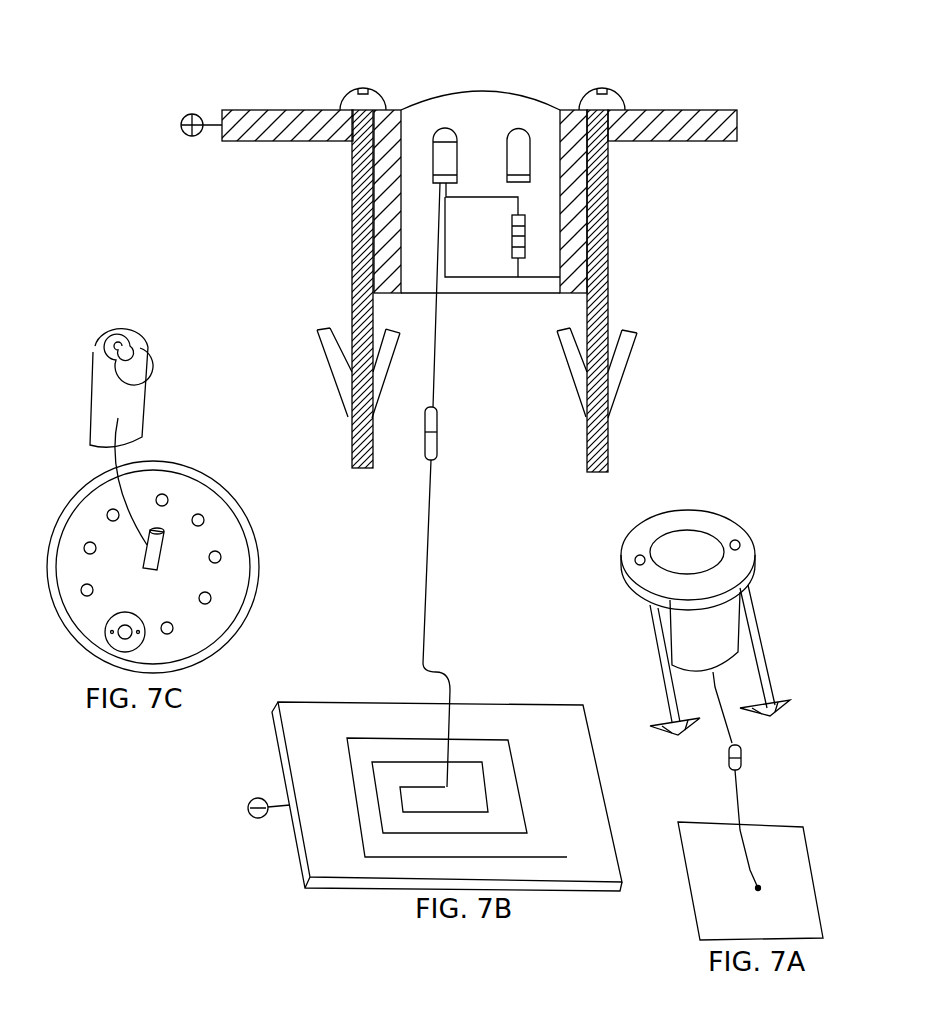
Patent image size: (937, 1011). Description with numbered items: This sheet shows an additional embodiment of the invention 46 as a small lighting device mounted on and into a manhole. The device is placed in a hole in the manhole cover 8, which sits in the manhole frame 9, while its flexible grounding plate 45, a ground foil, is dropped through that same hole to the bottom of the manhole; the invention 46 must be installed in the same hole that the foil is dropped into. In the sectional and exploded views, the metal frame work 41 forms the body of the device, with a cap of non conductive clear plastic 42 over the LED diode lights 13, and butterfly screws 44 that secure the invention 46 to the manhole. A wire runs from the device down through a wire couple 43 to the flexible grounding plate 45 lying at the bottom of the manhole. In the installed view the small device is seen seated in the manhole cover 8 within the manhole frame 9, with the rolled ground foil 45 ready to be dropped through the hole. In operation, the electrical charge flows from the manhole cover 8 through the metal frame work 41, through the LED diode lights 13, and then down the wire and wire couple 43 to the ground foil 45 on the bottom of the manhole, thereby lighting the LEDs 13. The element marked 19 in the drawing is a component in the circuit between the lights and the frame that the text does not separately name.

In FIG. 7C, the manhole cover 8 is at (205, 530).
In FIG. 7C, the manhole frame 9 is at (250, 553).
In FIG. 7B, the LED diode lights 13 is at (512, 127).
In FIG. 7B, the resistor 19 is at (514, 240).
In FIG. 7B, the metal frame work 41 is at (650, 110).
In FIG. 7A, the metal frame work 41 is at (756, 570).
In FIG. 7B, the non conductive clear plastic 42 is at (437, 112).
In FIG. 7A, the non conductive clear plastic 42 is at (705, 546).
In FIG. 7B, the wire couple 43 is at (438, 423).
In FIG. 7A, the wire couple 43 is at (742, 757).
In FIG. 7B, the butterfly screws 44 is at (352, 297).
In FIG. 7A, the butterfly screws 44 is at (668, 681).
In FIG. 7B, the flexible grounding plate 45 is at (607, 863).
In FIG. 7C, the flexible grounding plate 45 is at (133, 388).
In FIG. 7A, the flexible grounding plate 45 is at (707, 897).
In FIG. 7B, the invention 46 is at (525, 256).
In FIG. 7C, the invention 46 is at (80, 632).
In FIG. 7A, the invention 46 is at (749, 610).